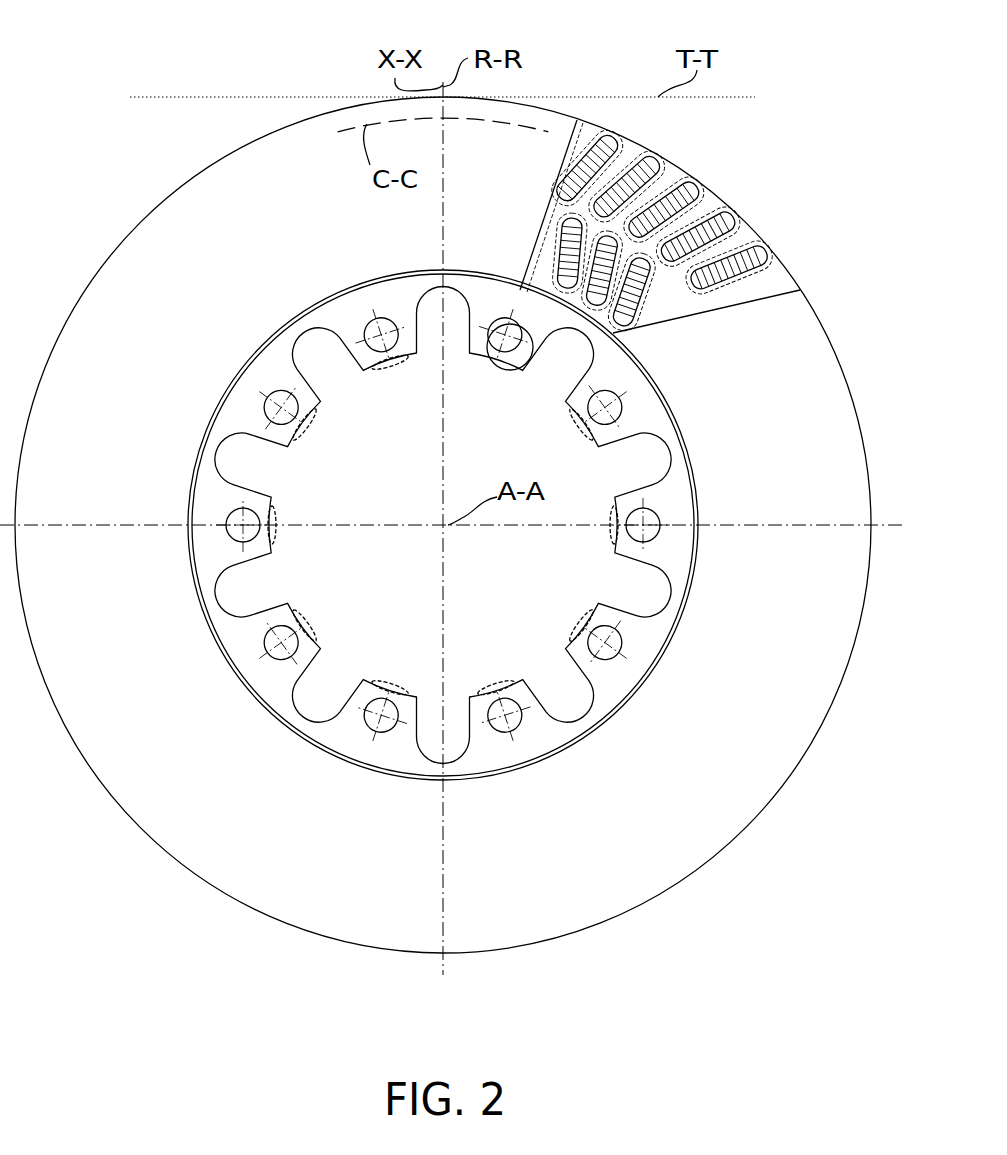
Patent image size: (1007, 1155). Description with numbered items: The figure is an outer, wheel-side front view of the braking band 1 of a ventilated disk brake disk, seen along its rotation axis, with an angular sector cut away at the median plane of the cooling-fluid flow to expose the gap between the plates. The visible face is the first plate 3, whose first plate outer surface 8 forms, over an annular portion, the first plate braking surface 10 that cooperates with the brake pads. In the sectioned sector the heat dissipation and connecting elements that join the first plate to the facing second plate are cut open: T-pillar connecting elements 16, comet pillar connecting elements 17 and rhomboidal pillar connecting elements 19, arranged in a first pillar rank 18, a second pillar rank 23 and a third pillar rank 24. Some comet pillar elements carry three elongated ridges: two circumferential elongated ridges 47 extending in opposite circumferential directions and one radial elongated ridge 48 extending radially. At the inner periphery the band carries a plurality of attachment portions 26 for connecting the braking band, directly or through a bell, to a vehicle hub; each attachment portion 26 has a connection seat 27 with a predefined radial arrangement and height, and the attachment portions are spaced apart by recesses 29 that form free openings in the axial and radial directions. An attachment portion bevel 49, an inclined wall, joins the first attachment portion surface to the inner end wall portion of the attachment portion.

The braking band 1 is at (165, 130).
The first plate 3 is at (290, 205).
The first plate outer surface 8 is at (205, 240).
The first plate braking surface 10 is at (172, 302).
The heat dissipation and T-pillar connecting element 16 is at (686, 180).
The heat dissipation and comet pillar connecting element 17 is at (711, 232).
The first pillar rank 18 is at (764, 306).
The heat dissipation and rhomboidal pillar connecting element 19 is at (562, 283).
The second pillar rank 23 is at (724, 338).
The third pillar rank 24 is at (680, 382).
The attachment portion 26 is at (530, 347).
The connection seat 27 is at (515, 323).
The recesses 29 is at (448, 328).
The circumferential elongated ridge 47 is at (673, 166).
The radial elongated ridge 48 is at (700, 255).
The attachment portion bevel 49 is at (478, 357).